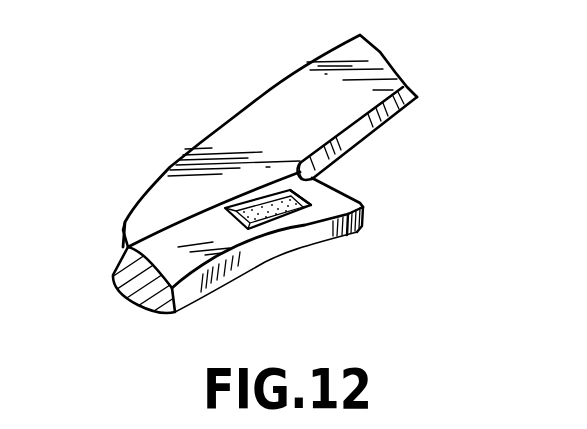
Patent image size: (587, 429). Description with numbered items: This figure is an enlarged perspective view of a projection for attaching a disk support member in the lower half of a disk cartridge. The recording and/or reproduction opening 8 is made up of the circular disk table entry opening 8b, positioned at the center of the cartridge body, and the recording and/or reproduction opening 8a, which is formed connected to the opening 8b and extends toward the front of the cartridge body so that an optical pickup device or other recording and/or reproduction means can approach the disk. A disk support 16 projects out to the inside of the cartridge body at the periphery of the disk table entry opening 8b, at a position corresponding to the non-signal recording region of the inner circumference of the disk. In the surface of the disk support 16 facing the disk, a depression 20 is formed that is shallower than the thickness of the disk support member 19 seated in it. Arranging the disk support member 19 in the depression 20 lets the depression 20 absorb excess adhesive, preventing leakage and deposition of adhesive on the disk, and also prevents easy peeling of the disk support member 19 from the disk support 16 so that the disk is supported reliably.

The recording and/or reproduction opening 8 is at (347, 130).
The recording and/or reproduction opening 8a is at (410, 100).
The disk table entry opening 8b is at (286, 245).
The disk support 16 is at (163, 247).
The disk support member 19 is at (248, 206).
The depression 20 is at (296, 198).